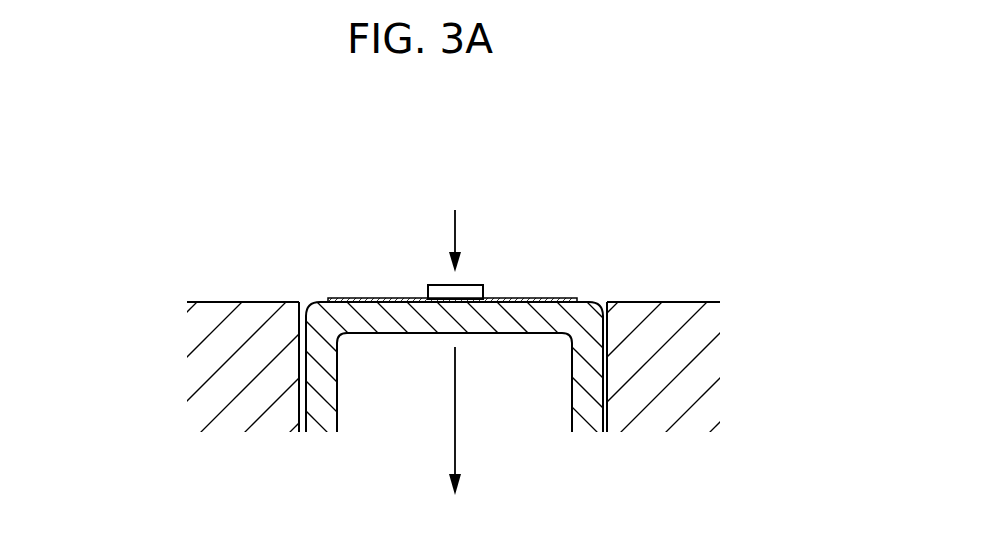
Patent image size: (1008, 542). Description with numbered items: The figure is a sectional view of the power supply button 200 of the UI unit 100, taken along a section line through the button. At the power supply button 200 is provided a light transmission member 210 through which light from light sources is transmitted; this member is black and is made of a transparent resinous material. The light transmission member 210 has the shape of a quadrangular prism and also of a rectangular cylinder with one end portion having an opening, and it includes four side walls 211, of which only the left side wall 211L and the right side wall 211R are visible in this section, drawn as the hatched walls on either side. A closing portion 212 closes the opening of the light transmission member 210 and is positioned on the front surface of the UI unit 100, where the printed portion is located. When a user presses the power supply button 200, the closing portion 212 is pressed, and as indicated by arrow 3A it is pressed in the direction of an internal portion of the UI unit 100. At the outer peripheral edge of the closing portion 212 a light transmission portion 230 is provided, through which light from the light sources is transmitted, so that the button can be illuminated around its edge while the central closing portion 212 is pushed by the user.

The UI unit 100 is at (670, 125).
The power supply button 200 is at (460, 265).
The light transmission member 210 is at (523, 252).
The closing portion 212 is at (540, 299).
The side walls 211 is at (457, 360).
The left side wall 211L is at (323, 360).
The right side wall 211R is at (588, 368).
The light transmission portion 230 is at (310, 298).
The arrow 3A is at (455, 442).